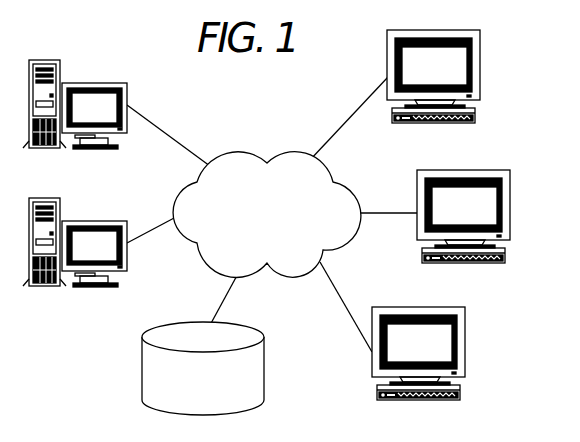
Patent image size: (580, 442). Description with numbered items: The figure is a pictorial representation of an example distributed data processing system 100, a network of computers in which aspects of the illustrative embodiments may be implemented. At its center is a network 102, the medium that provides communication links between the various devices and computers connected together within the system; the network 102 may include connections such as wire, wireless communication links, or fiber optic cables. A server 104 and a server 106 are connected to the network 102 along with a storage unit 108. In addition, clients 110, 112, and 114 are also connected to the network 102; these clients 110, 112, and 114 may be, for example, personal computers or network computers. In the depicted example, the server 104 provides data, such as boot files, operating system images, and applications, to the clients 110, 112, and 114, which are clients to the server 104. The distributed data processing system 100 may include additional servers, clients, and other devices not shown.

The distributed data processing system 100 is at (99, 354).
The network 102 is at (232, 153).
The server 104 is at (93, 80).
The server 106 is at (93, 218).
The storage unit 108 is at (265, 360).
The client 110 is at (481, 70).
The client 112 is at (511, 208).
The client 114 is at (466, 344).